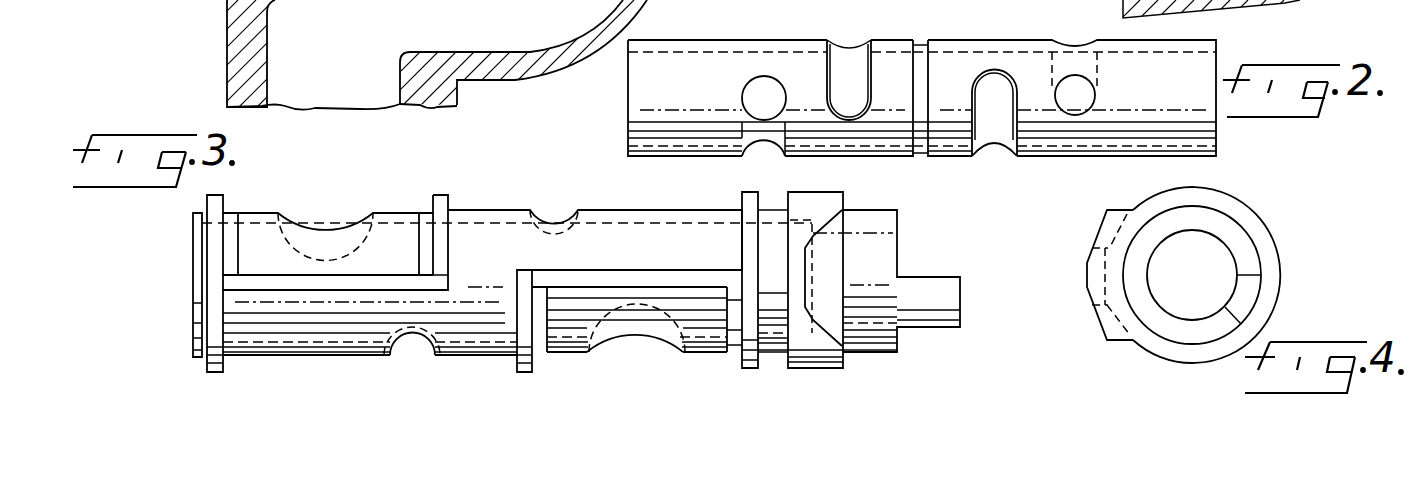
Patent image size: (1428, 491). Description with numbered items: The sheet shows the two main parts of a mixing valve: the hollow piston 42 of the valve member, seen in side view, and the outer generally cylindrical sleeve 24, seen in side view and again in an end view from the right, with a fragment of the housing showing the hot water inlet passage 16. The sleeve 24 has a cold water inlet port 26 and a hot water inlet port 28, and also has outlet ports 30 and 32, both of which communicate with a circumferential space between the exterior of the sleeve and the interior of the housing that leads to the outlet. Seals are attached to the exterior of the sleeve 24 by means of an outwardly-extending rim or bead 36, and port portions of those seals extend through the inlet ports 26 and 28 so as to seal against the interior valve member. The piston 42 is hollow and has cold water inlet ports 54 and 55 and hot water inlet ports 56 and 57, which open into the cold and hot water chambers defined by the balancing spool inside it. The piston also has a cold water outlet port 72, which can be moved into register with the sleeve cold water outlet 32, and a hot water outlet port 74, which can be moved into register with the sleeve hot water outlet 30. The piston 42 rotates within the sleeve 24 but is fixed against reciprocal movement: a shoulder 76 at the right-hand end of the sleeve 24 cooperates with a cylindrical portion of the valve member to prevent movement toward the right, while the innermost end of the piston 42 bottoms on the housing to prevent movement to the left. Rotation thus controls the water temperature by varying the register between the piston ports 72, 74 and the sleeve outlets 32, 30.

In FIG. 3, the hot water inlet passage 16 is at (385, 60).
In FIG. 3, the sleeve 24 is at (495, 213).
In FIG. 4, the sleeve 24 is at (1263, 240).
In FIG. 3, the cold water inlet port 26 is at (332, 240).
In FIG. 3, the hot water inlet port 28 is at (650, 325).
In FIG. 3, the outlet port 30 is at (558, 230).
In FIG. 3, the outlet port 32 is at (415, 340).
In FIG. 3, the rim or bead 36 is at (448, 272).
In FIG. 2, the piston 42 is at (1105, 157).
In FIG. 2, the cold water inlet port 54 is at (760, 150).
In FIG. 2, the cold water inlet port 55 is at (750, 80).
In FIG. 2, the hot water inlet port 56 is at (1073, 18).
In FIG. 2, the hot water inlet port 57 is at (1090, 107).
In FIG. 2, the cold water outlet port 72 is at (858, 46).
In FIG. 2, the hot water outlet port 74 is at (977, 105).
In FIG. 3, the shoulder 76 is at (812, 327).